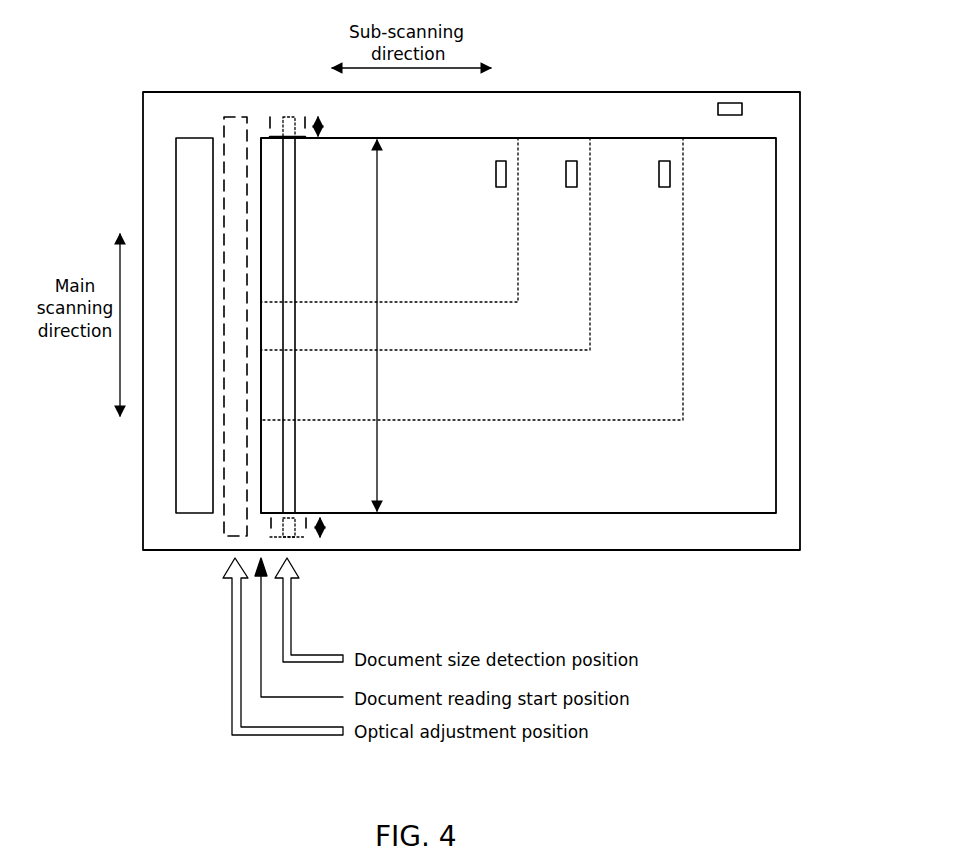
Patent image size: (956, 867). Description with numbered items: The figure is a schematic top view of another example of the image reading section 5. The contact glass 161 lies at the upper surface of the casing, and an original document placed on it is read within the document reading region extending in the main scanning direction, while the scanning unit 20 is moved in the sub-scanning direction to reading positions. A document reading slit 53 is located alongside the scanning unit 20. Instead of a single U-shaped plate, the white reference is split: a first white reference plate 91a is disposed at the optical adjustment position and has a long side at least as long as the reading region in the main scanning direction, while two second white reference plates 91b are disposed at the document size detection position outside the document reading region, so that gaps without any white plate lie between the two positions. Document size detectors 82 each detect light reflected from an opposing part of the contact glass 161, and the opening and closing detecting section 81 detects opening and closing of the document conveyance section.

The image reading section 5 is at (633, 92).
The document reading slit 53 is at (191, 137).
The first white reference plate 91a is at (231, 117).
The second white reference plates 91b is at (285, 117).
The contact glass 161 is at (416, 152).
The scanning unit 20 is at (296, 262).
The document size detectors 82 is at (501, 160).
The opening and closing detecting section 81 is at (729, 101).